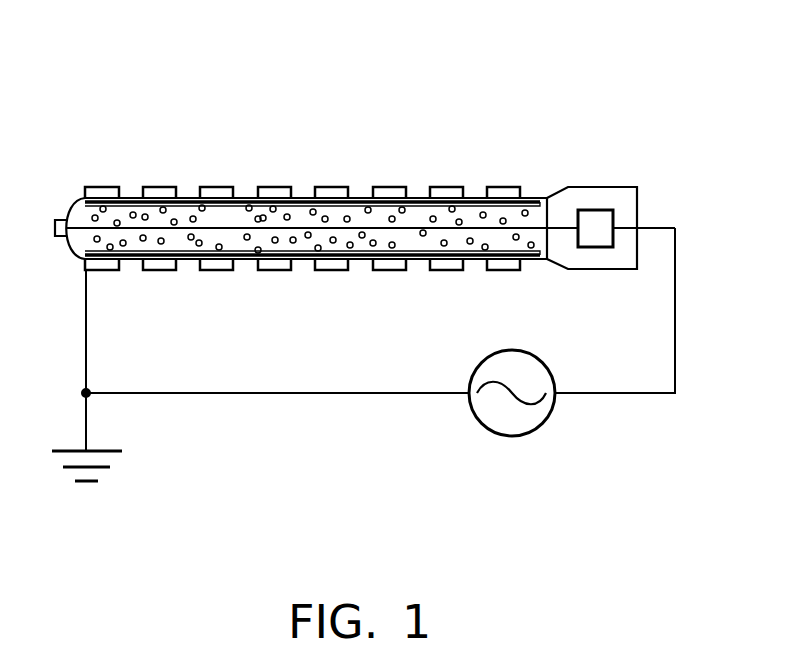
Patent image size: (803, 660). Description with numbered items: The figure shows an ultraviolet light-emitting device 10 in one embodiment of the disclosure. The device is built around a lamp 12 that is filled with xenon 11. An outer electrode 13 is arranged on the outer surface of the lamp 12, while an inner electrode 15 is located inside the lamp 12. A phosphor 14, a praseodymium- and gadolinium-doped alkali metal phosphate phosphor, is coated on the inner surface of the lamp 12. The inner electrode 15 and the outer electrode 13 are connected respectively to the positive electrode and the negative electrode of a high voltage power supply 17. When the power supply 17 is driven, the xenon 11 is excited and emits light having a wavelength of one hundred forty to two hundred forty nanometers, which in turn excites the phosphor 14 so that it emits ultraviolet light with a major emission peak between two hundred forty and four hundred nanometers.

The ultraviolet light-emitting device 10 is at (613, 90).
The xenon 11 is at (247, 241).
The lamp 12 is at (543, 198).
The outer electrode 13 is at (445, 192).
The phosphor 14 is at (358, 256).
The inner electrode 15 is at (239, 226).
The high voltage power supply 17 is at (511, 437).